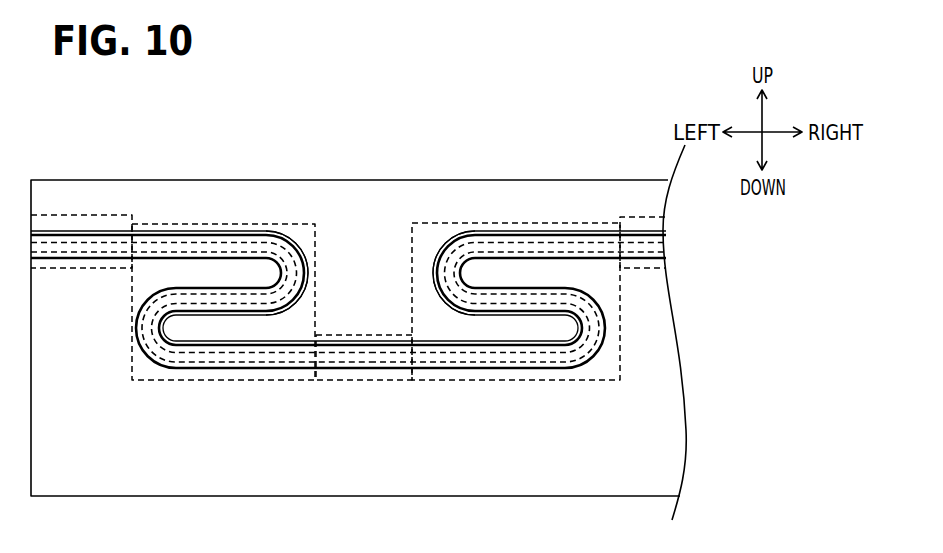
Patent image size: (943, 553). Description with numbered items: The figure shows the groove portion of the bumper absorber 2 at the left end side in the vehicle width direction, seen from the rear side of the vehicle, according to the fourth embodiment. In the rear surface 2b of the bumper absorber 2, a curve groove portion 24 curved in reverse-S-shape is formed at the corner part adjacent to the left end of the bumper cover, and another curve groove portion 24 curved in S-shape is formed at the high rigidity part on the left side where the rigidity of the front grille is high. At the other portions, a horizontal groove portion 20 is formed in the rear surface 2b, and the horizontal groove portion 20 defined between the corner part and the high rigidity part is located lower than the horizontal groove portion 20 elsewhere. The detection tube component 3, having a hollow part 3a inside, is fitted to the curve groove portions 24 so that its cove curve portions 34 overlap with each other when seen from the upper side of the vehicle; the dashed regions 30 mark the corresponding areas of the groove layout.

The bumper absorber 2 is at (354, 180).
The rear surface of the bumper absorber 2b is at (668, 462).
The detection tube component 3 is at (493, 236).
The hollow part 3a is at (159, 250).
The horizontal groove portion 20 is at (348, 240).
The curve groove portion 24 is at (283, 240).
The connection region 30 is at (78, 268).
The cove curve portion 34 is at (221, 224).